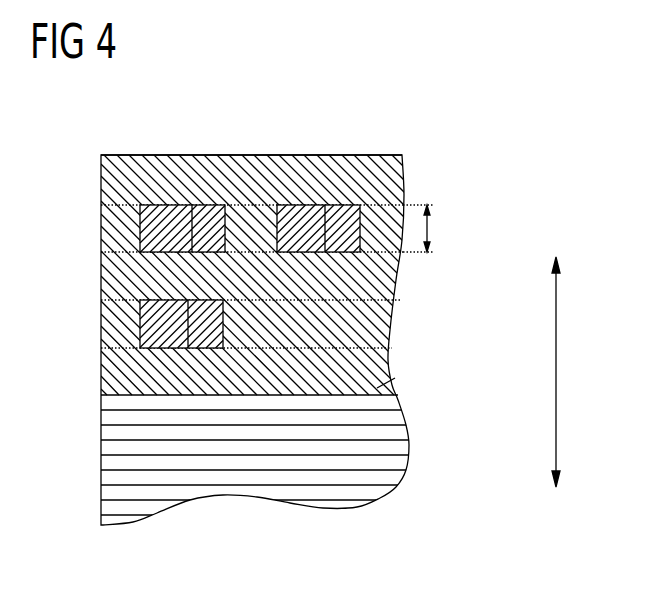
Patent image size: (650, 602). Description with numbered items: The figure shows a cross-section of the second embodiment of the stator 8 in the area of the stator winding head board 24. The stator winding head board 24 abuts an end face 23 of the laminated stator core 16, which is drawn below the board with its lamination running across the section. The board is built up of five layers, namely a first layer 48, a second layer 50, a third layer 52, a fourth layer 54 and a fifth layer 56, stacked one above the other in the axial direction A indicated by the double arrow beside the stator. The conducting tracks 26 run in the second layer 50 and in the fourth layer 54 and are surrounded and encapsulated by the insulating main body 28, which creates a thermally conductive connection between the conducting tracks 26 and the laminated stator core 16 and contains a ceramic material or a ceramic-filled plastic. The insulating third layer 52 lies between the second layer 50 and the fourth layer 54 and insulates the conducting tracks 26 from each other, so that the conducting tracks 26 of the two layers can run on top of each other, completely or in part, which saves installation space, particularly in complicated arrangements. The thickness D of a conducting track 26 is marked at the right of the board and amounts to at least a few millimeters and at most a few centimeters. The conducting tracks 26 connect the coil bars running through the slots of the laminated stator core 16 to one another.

The stator 8 is at (440, 110).
The laminated stator core 16 is at (335, 483).
The end face 23 is at (377, 388).
The stator winding head board 24 is at (251, 195).
The conducting track 26 is at (193, 205).
The insulating main body 28 is at (138, 157).
The first layer 48 is at (101, 183).
The second layer 50 is at (101, 230).
The third layer 52 is at (101, 280).
The fourth layer 54 is at (101, 323).
The fifth layer 56 is at (101, 381).
The thickness D is at (430, 228).
The axial direction A is at (557, 345).